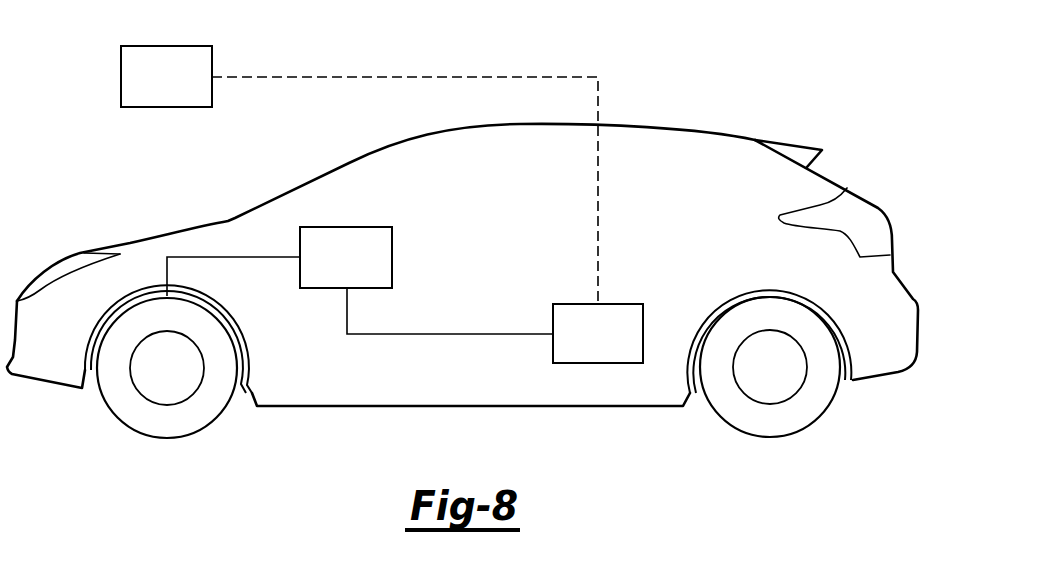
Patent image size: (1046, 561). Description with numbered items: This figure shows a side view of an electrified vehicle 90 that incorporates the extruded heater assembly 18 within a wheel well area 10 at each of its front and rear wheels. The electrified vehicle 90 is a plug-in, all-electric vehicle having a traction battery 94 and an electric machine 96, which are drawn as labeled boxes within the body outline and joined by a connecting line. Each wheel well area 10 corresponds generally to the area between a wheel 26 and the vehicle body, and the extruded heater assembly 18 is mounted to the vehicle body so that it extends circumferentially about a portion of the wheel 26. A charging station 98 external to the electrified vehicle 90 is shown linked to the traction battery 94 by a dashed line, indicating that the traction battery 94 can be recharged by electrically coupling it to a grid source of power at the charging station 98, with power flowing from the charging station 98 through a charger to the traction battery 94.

The electrified vehicle 90 is at (802, 124).
The charging station 98 is at (167, 46).
The electric machine 96 is at (347, 227).
The traction battery 94 is at (620, 304).
The extruded heater assembly 18 is at (242, 350).
The wheel 26 is at (185, 417).
The wheel well area 10 is at (97, 411).